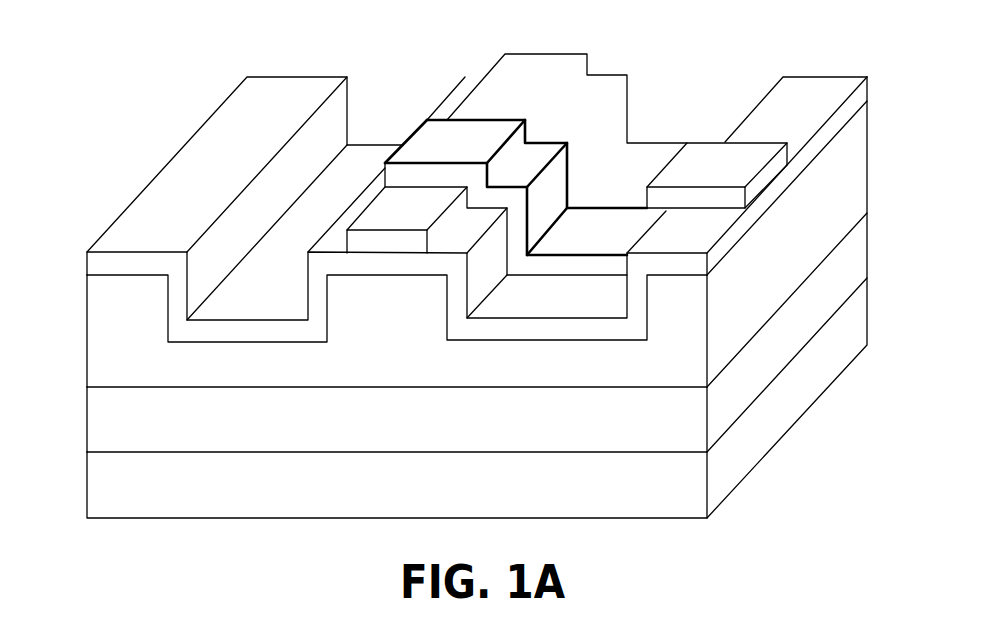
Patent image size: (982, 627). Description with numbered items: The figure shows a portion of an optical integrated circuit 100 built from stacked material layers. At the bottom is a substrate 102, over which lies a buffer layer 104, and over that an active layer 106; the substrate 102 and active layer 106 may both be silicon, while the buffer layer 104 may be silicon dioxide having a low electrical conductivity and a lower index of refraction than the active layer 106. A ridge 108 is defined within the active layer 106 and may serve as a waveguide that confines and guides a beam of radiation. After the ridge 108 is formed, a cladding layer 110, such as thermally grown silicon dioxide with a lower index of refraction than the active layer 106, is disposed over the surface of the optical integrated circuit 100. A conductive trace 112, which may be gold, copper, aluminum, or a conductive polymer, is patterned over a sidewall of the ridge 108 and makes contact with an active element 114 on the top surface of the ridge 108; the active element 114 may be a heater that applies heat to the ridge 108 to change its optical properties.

The optical integrated circuit 100 is at (143, 110).
The substrate 102 is at (426, 507).
The buffer layer 104 is at (425, 433).
The active layer 106 is at (512, 378).
The ridge 108 is at (413, 323).
The cladding layer 110 is at (96, 257).
The conductive trace 112 is at (723, 162).
The active element 114 is at (507, 91).